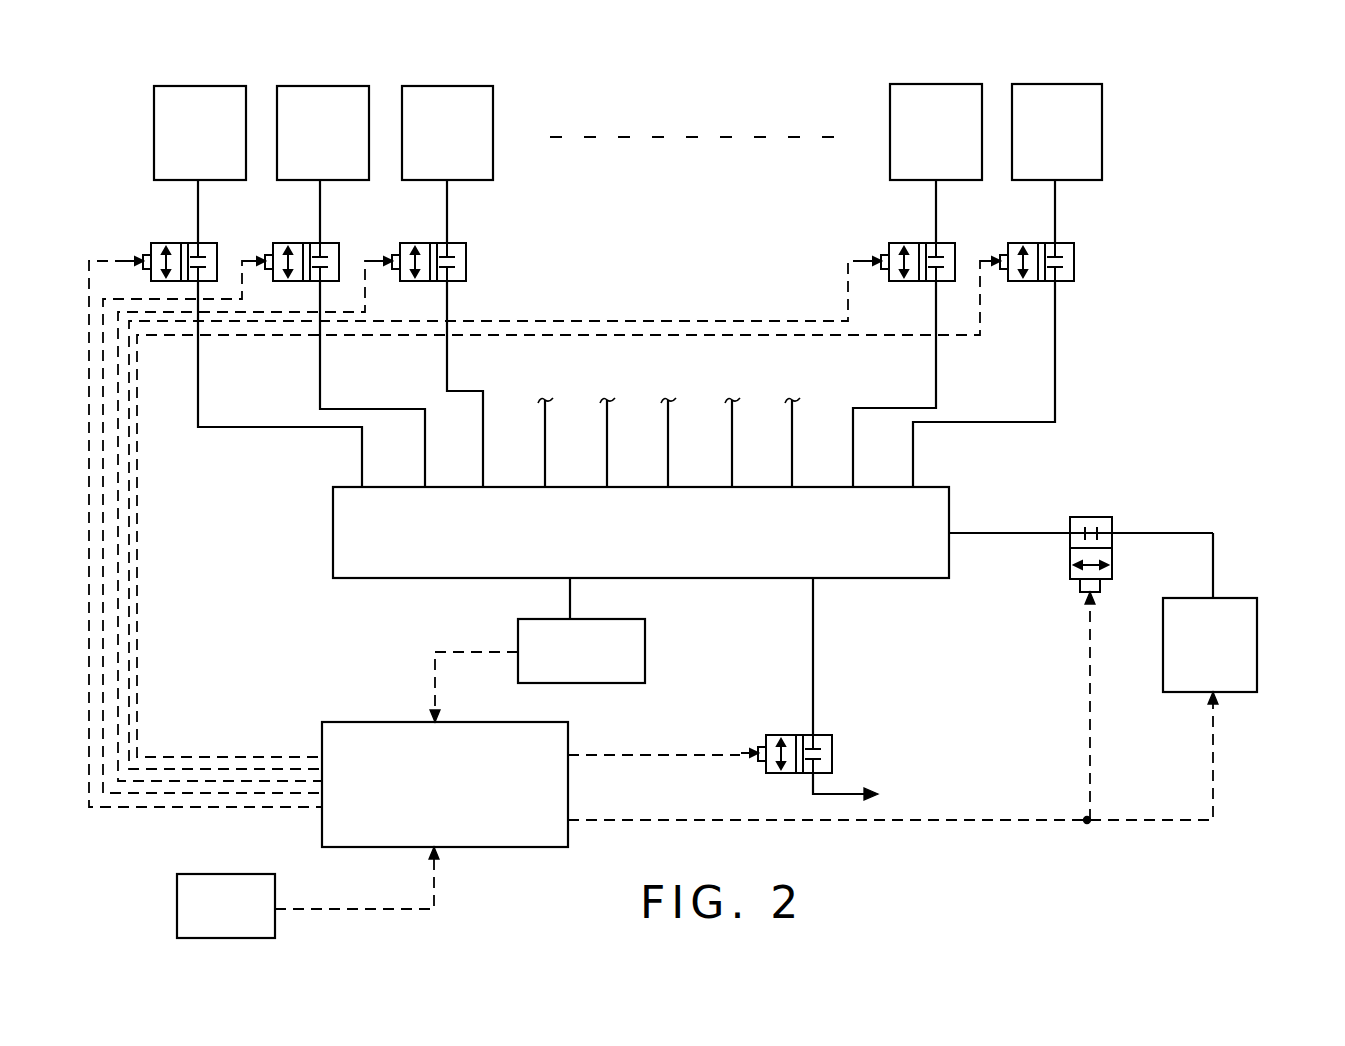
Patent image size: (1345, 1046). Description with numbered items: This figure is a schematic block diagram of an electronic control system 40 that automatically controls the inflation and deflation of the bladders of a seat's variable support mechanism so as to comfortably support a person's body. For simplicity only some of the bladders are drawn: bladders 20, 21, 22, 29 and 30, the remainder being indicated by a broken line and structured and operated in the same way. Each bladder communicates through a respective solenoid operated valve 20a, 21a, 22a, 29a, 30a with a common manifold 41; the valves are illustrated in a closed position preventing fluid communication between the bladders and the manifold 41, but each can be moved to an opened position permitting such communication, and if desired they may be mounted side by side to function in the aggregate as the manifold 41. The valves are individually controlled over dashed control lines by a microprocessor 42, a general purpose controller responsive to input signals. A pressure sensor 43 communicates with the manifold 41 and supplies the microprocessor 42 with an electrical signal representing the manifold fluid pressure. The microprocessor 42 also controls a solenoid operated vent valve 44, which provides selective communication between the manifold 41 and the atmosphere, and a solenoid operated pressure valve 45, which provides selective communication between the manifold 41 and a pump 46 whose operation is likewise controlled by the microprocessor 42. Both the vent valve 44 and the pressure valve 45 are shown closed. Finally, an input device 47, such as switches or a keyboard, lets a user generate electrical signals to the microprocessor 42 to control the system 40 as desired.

The bladder 20 is at (212, 146).
The bladder 21 is at (330, 146).
The bladder 22 is at (458, 146).
The bladder 29 is at (944, 146).
The bladder 30 is at (1068, 144).
The solenoid operated valve 20a is at (207, 243).
The solenoid operated valve 21a is at (329, 243).
The solenoid operated valve 22a is at (456, 243).
The solenoid operated valve 29a is at (945, 243).
The solenoid operated valve 30a is at (1064, 243).
The electronic control system 40 is at (1153, 330).
The manifold 41 is at (933, 487).
The microprocessor 42 is at (550, 722).
The pressure sensor 43 is at (630, 619).
The solenoid operated vent valve 44 is at (822, 735).
The solenoid operated pressure valve 45 is at (1095, 517).
The pump 46 is at (1258, 600).
The input device 47 is at (233, 874).